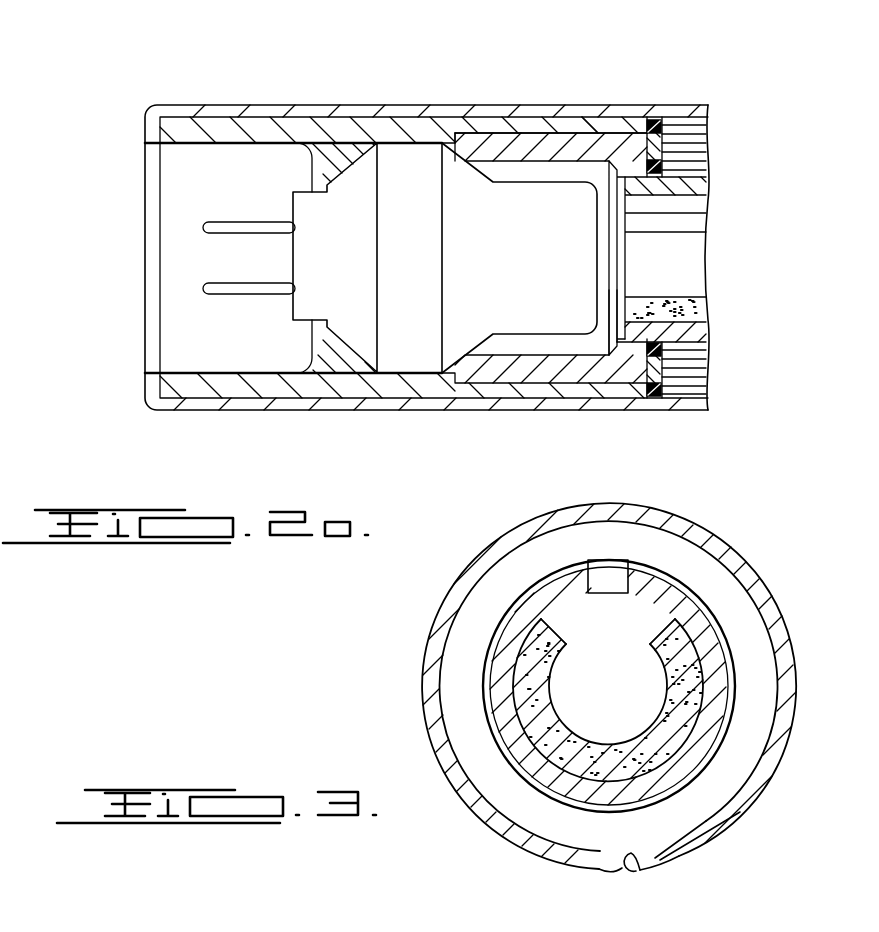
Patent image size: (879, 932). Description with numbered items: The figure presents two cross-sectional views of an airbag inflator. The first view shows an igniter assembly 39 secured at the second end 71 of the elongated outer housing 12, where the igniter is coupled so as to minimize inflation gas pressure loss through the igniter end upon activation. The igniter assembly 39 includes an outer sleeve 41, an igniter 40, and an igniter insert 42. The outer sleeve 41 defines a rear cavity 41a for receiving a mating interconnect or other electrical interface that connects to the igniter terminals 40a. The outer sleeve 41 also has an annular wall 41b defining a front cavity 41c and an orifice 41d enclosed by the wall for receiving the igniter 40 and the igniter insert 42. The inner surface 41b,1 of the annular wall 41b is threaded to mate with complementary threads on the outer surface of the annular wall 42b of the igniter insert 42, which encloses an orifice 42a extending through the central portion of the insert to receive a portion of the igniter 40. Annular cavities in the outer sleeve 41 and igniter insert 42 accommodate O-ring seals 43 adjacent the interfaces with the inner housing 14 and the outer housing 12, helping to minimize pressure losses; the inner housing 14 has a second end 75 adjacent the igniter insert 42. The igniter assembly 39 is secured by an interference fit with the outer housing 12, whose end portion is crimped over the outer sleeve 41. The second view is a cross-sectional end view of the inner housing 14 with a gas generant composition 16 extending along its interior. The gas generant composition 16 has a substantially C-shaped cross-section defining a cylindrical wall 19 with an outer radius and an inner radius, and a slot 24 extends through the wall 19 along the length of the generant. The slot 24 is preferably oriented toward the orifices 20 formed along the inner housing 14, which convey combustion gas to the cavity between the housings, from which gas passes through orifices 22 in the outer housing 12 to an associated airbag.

In FIG. 2A, the second end 71 is at (164, 85).
In FIG. 2A, the igniter assembly 39 is at (243, 121).
In FIG. 2A, the outer sleeve 41 is at (397, 133).
In FIG. 2A, the rear cavity 41a is at (243, 341).
In FIG. 2A, the annular wall 41b is at (493, 128).
In FIG. 2A, the inner surface 41b,1 is at (577, 119).
In FIG. 2A, the front cavity 41c is at (340, 151).
In FIG. 2A, the orifice 41d is at (310, 328).
In FIG. 2A, the igniter 40 is at (410, 350).
In FIG. 2A, the igniter terminals 40a is at (225, 228).
In FIG. 2A, the igniter insert 42 is at (550, 150).
In FIG. 2A, the orifice 42a is at (563, 345).
In FIG. 2A, the annular wall 42b is at (472, 128).
In FIG. 2A, the inner housing 14 is at (640, 183).
In FIG. 3, the inner housing 14 is at (722, 665).
In FIG. 2A, the O-ring seals 43 is at (654, 125).
In FIG. 2A, the second end 75 is at (618, 329).
In FIG. 2A, the outer housing 12 is at (706, 412).
In FIG. 3, the gas generant composition 16 is at (520, 640).
In FIG. 3, the cylindrical wall 19 is at (682, 735).
In FIG. 3, the orifices 20 is at (622, 584).
In FIG. 3, the orifices 22 is at (645, 864).
In FIG. 3, the slot 24 is at (662, 635).